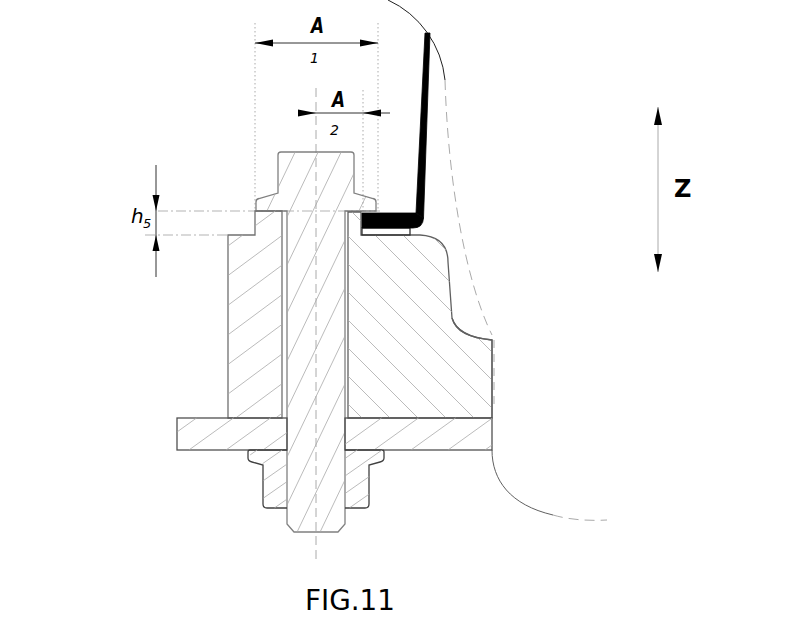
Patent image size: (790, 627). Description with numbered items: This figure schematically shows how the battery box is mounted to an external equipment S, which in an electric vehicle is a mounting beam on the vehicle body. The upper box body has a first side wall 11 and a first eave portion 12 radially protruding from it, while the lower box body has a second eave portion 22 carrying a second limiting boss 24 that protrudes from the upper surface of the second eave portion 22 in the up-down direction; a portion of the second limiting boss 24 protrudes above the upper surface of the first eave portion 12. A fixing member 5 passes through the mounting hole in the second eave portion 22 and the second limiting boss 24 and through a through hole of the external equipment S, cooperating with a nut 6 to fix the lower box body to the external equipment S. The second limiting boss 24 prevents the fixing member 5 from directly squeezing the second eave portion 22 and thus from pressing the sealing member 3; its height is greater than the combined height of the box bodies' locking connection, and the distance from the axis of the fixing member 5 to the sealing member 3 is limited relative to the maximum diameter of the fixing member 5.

The first side wall 11 is at (425, 133).
The first eave portion 12 is at (393, 218).
The sealing member 3 is at (408, 231).
The second limiting boss 24 is at (407, 280).
The second eave portion 22 is at (485, 326).
The fixing member 5 is at (299, 323).
The nut 6 is at (355, 488).
The external equipment S is at (232, 437).